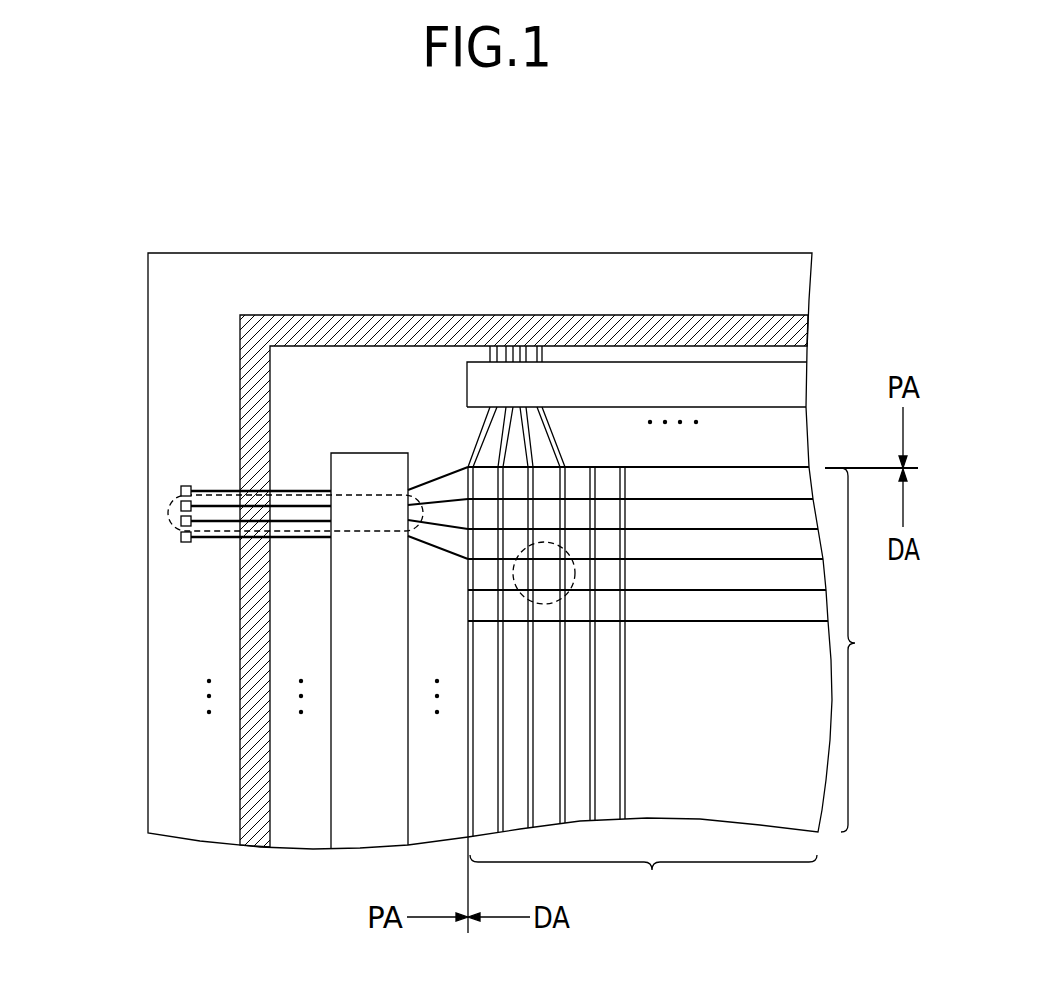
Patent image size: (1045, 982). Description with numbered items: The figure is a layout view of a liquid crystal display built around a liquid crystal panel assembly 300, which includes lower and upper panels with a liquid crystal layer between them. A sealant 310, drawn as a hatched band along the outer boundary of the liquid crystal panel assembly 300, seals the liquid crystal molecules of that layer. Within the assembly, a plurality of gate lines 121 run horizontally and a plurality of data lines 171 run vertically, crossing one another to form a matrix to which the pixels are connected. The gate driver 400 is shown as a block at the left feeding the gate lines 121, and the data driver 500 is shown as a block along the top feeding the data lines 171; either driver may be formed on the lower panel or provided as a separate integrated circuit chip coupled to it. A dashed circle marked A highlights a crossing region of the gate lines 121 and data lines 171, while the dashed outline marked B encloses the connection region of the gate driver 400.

The liquid crystal panel assembly 300 is at (138, 297).
The sealant 310 is at (240, 388).
The gate driver 400 is at (246, 651).
The data driver 500 is at (722, 346).
The gate lines 121 is at (683, 649).
The data lines 171 is at (642, 700).
The pixel area A is at (580, 576).
The gate driver region B is at (295, 496).